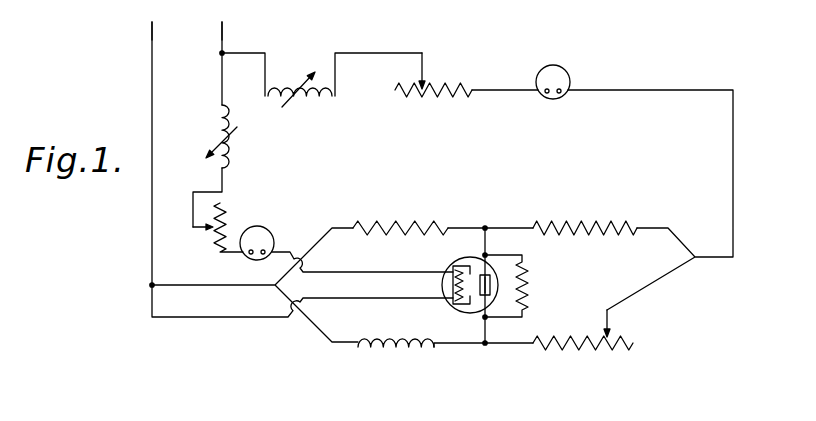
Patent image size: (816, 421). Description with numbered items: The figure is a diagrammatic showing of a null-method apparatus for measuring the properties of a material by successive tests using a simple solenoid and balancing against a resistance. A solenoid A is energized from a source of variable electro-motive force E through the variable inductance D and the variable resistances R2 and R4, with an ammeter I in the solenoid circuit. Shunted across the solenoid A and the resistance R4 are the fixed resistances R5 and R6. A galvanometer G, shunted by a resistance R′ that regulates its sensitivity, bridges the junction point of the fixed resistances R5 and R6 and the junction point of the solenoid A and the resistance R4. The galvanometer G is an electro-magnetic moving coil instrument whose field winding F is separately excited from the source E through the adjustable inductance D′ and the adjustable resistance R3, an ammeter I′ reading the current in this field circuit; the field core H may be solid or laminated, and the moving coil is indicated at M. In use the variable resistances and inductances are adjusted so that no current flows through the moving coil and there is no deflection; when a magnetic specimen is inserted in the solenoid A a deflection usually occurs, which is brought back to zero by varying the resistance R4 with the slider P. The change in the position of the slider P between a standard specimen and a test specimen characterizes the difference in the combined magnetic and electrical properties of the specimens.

The source of variable electro-motive force E is at (187, 27).
The variable inductance D is at (282, 96).
The adjustable inductance D′ is at (215, 125).
The variable resistance R2 is at (436, 82).
The ammeter I is at (567, 73).
The adjustable resistance R3 is at (228, 220).
The ammeter I′ is at (268, 234).
The fixed resistance R5 is at (404, 222).
The fixed resistance R6 is at (608, 222).
The resistance R′ is at (529, 285).
The field core H is at (460, 268).
The field winding F is at (454, 302).
The galvanometer G is at (490, 270).
The plate M is at (491, 300).
The solenoid A is at (394, 353).
The variable resistance R4 is at (571, 352).
The slider P is at (614, 333).